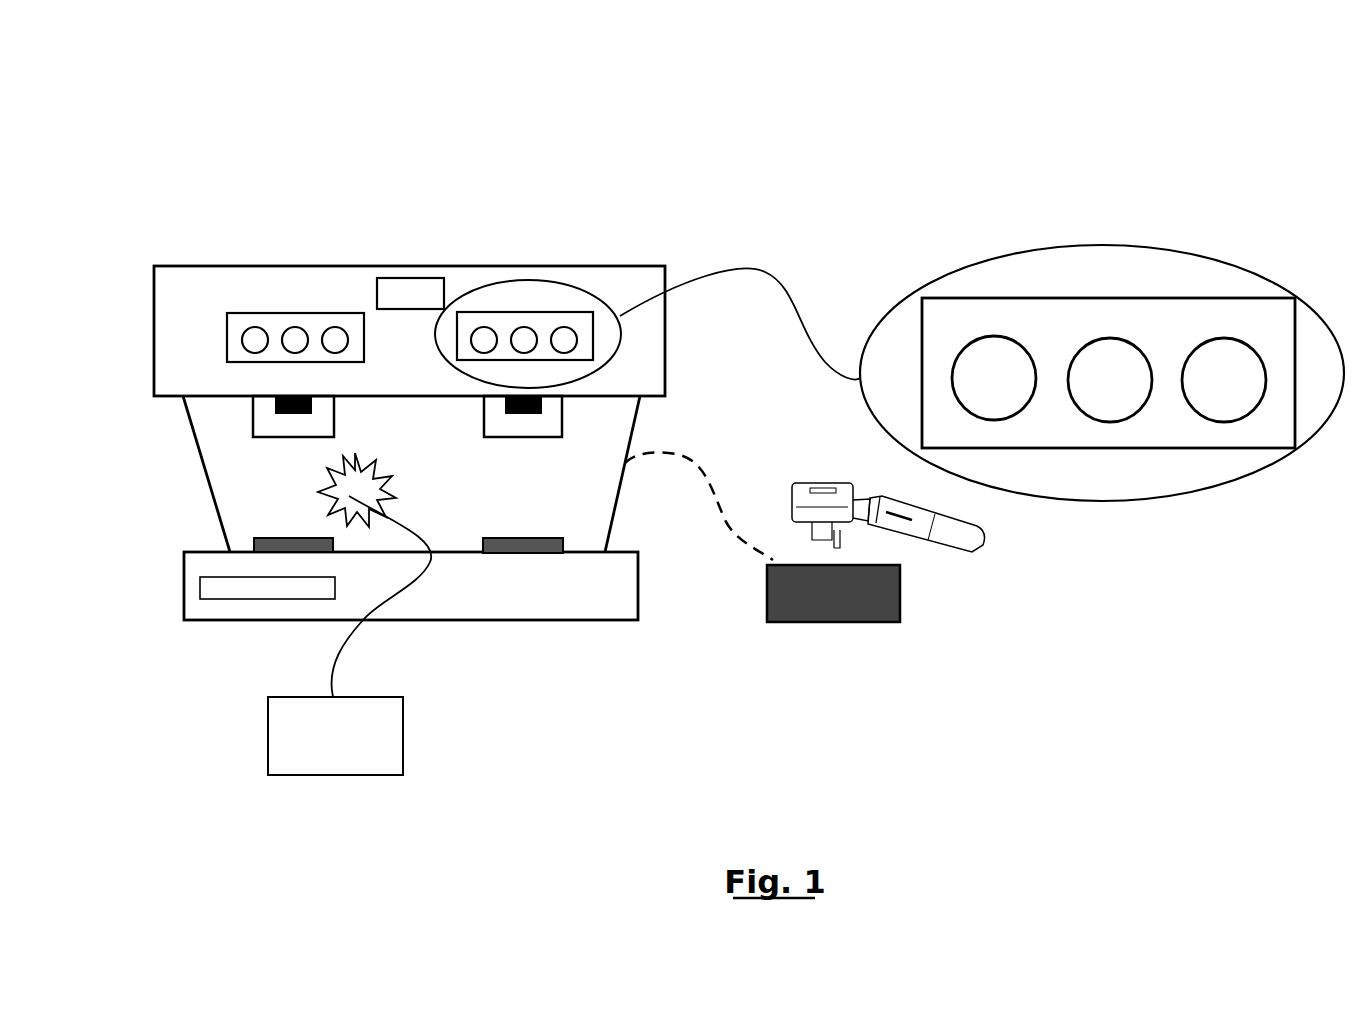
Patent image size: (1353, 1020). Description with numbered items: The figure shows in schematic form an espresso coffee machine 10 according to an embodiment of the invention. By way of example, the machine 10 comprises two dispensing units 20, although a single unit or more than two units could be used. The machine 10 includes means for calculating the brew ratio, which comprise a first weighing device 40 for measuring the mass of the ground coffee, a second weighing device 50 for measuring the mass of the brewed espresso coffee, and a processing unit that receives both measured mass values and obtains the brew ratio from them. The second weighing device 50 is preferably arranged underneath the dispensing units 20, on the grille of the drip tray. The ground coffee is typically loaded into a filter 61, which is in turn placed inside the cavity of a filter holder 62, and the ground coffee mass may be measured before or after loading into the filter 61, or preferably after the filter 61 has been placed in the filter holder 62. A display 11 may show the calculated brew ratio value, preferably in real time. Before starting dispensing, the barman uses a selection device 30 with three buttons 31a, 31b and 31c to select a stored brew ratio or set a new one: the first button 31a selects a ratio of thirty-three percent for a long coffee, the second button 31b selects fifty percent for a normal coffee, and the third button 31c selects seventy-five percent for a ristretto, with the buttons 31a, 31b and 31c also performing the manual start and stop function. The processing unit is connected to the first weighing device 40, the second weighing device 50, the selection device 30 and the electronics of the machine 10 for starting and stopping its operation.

The espresso coffee machine 10 is at (577, 212).
The display 11 is at (413, 278).
The dispensing unit 20 is at (502, 423).
The selection device 30 is at (222, 302).
The first button 31a is at (988, 336).
The second button 31b is at (1107, 422).
The third button 31c is at (1223, 422).
The first weighing device 40 is at (828, 618).
The second weighing device 50 is at (256, 538).
The filter 61 is at (888, 529).
The filter holder 62 is at (948, 560).